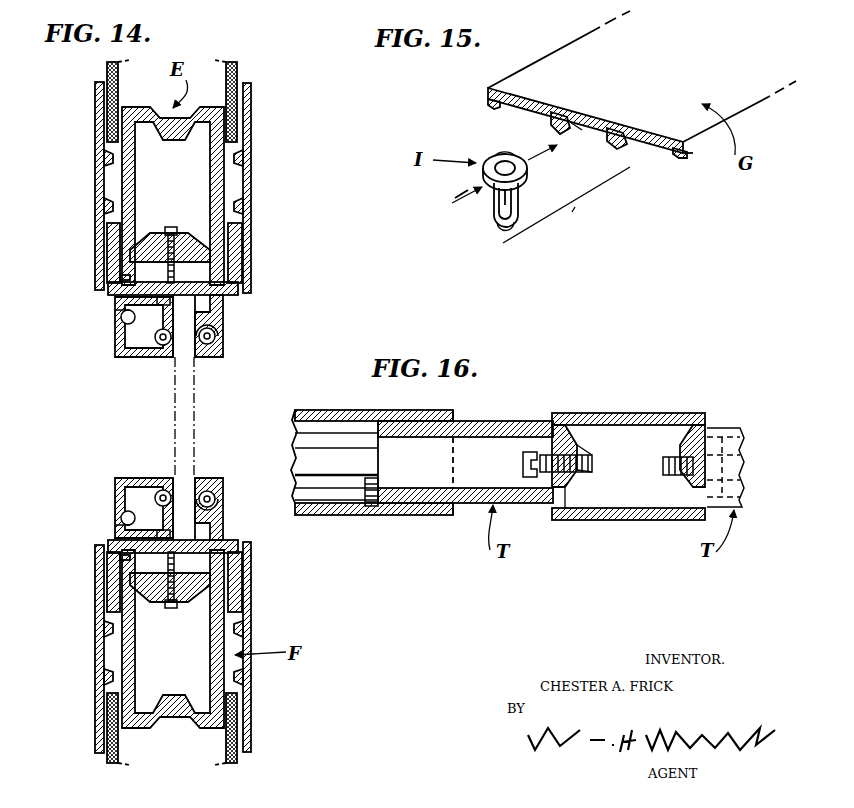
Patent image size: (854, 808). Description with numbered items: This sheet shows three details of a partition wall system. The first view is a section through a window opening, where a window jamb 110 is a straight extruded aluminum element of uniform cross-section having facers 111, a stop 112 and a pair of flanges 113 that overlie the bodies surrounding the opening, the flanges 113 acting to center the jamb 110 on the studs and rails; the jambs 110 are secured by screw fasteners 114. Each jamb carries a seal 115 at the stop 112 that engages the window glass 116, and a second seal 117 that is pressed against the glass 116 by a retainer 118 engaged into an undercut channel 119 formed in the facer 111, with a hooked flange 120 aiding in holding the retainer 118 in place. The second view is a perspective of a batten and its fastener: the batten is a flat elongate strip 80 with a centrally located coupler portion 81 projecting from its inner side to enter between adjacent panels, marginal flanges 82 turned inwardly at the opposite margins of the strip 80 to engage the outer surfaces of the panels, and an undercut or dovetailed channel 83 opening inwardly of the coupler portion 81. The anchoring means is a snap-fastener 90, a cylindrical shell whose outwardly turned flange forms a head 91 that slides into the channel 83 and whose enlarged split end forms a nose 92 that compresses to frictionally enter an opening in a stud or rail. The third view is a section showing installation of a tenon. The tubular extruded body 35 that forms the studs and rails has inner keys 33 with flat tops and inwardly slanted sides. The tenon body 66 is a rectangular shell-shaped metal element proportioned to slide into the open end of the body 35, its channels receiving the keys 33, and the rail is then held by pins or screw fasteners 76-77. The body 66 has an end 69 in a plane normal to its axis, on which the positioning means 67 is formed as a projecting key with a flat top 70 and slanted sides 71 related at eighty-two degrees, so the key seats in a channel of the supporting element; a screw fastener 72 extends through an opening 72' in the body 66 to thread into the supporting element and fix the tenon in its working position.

In FIG. 14, the window jamb 110 is at (226, 313).
In FIG. 14, the facer 111 is at (110, 280).
In FIG. 14, the stop 112 is at (222, 330).
In FIG. 14, the flanges 113 is at (107, 243).
In FIG. 14, the screw fasteners 114 is at (172, 227).
In FIG. 14, the seal 115 is at (203, 355).
In FIG. 14, the window glass 116 is at (174, 423).
In FIG. 14, the seal 117 is at (160, 350).
In FIG. 14, the retainer 118 is at (118, 349).
In FIG. 14, the channel 119 is at (121, 318).
In FIG. 14, the hooked flange 120 is at (160, 300).
In FIG. 15, the strip 80 is at (642, 82).
In FIG. 15, the coupler portion 81 is at (625, 145).
In FIG. 15, the marginal flanges 82 is at (489, 100).
In FIG. 15, the undercut channel 83 is at (592, 132).
In FIG. 15, the snap-fastener 90 is at (490, 217).
In FIG. 15, the head 91 is at (503, 155).
In FIG. 15, the nose 92 is at (500, 226).
In FIG. 16, the inner keys 33 is at (325, 462).
In FIG. 16, the extruded body 35 is at (330, 408).
In FIG. 16, the body 66 is at (512, 421).
In FIG. 16, the positioning means 67 is at (566, 430).
In FIG. 16, the end 69 is at (566, 505).
In FIG. 16, the flat top 70 is at (578, 470).
In FIG. 16, the slanted sides 71 is at (574, 480).
In FIG. 16, the fastener 72 is at (616, 462).
In FIG. 16, the opening 72' is at (505, 464).
In FIG. 16, the pins or screw fasteners 76-77 is at (370, 506).